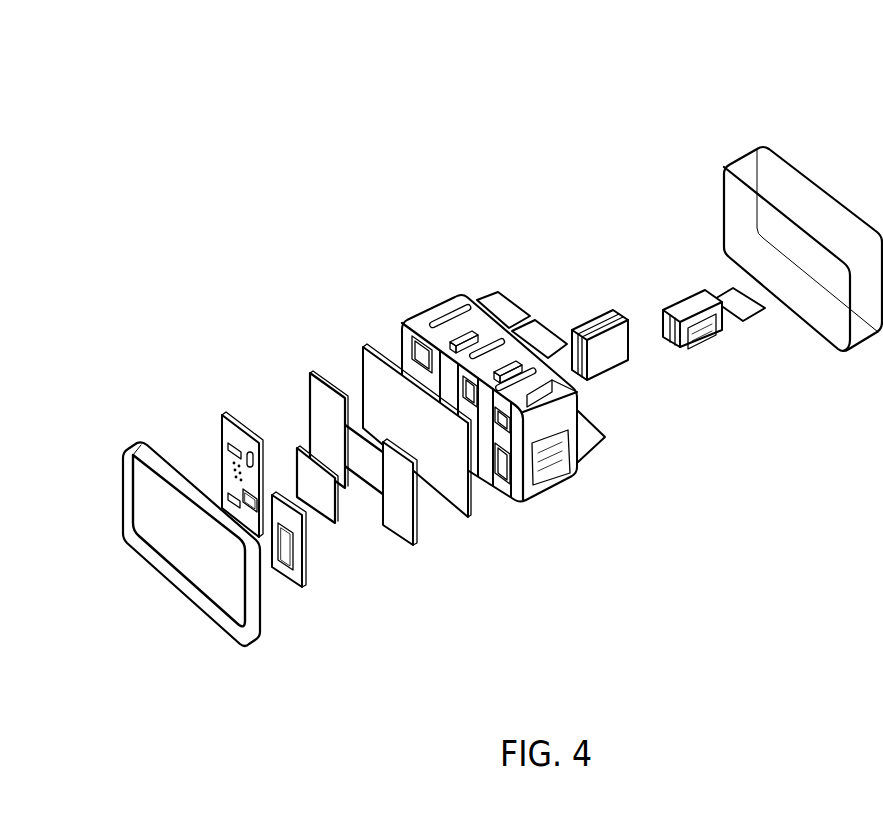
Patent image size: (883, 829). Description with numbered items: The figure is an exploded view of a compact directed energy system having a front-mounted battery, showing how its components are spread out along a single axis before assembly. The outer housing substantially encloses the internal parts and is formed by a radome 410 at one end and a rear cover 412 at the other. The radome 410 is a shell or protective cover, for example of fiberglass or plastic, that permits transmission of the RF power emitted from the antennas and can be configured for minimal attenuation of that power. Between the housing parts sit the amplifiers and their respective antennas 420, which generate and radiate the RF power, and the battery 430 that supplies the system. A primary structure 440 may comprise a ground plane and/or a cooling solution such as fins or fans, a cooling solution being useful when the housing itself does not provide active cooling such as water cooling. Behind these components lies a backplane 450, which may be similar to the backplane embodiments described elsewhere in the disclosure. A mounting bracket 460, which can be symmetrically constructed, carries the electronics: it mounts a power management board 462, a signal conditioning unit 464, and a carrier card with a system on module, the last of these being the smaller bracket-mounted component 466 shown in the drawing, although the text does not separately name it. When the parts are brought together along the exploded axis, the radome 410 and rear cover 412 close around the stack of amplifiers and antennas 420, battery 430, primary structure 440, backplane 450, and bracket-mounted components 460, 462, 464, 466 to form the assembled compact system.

The radome 410 is at (822, 187).
The rear cover 412 is at (184, 598).
The amplifiers and their respective antennas 420 is at (707, 344).
The battery 430 is at (599, 317).
The primary structure 440 is at (445, 296).
The backplane 450 is at (447, 505).
The mounting bracket 460 is at (320, 373).
The power management board 462 is at (330, 518).
The signal conditioning unit 464 is at (233, 417).
The connector frame 466 is at (290, 577).